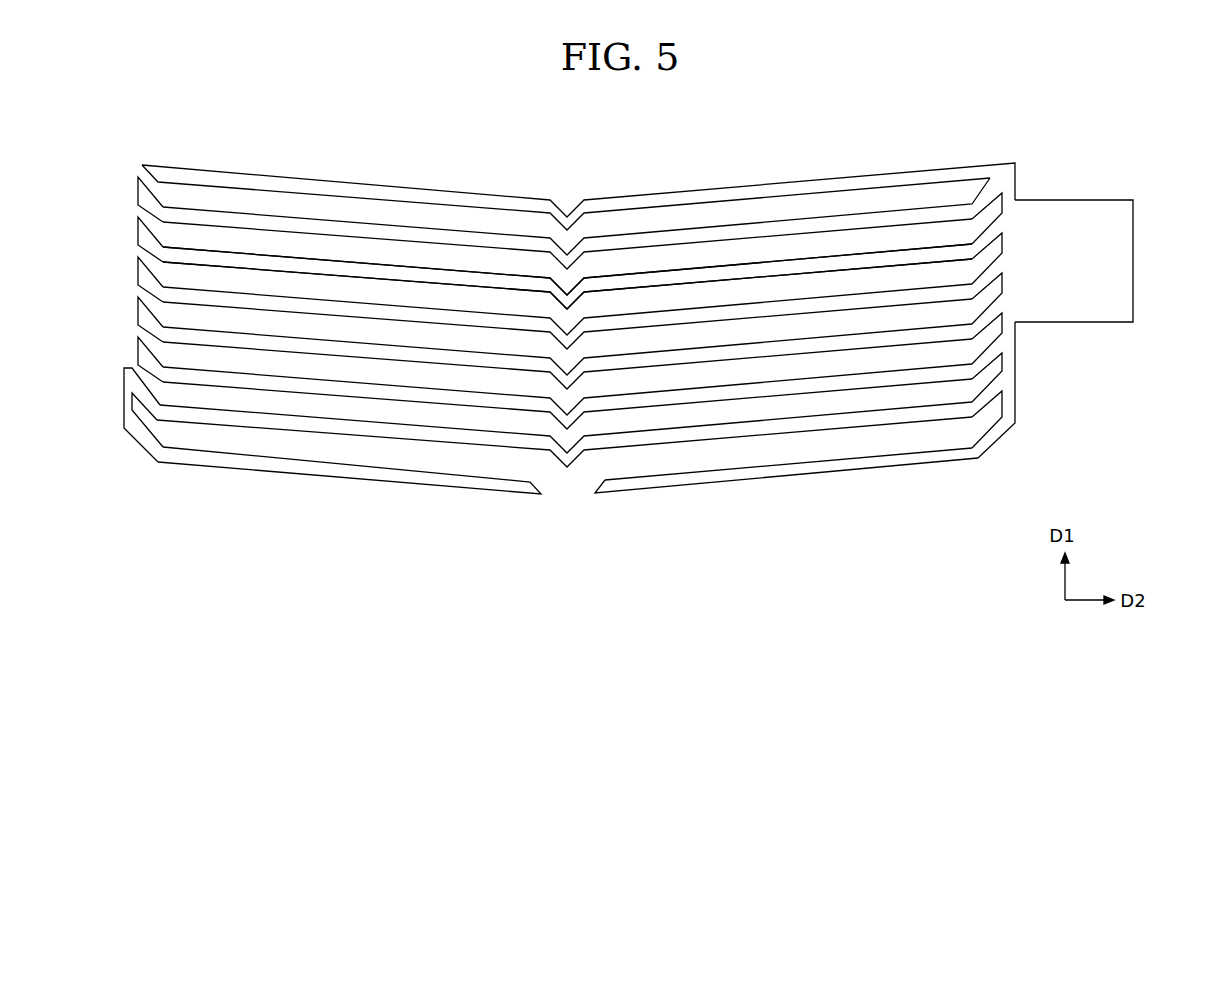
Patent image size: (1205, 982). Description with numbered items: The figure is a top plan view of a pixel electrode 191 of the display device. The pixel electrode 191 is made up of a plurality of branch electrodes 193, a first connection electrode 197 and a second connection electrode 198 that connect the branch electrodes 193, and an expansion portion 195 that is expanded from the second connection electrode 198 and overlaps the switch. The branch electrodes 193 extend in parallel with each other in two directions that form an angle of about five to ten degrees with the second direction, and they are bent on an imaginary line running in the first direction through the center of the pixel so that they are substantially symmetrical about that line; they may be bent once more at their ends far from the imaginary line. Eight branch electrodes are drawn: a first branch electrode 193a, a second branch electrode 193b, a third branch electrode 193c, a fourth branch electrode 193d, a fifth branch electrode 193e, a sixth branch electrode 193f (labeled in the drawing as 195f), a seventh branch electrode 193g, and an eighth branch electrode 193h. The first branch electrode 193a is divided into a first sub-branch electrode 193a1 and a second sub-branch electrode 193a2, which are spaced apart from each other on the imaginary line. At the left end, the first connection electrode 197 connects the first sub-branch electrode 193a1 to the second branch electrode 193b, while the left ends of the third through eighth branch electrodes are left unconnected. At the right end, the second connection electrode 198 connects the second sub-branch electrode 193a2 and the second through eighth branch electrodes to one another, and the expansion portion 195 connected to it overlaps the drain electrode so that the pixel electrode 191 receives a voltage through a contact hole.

The pixel electrode 191 is at (624, 445).
The branch electrodes 193 is at (576, 445).
The first branch electrode 193a is at (568, 523).
The first sub-branch electrode 193a1 is at (438, 478).
The second sub-branch electrode 193a2 is at (657, 483).
The second branch electrode 193b is at (725, 436).
The third branch electrode 193c is at (805, 386).
The fourth branch electrode 193d is at (878, 340).
The fifth branch electrode 193e is at (650, 322).
The sixth branch electrode 193f is at (567, 485).
The sixth line portion (as labeled) 195f is at (737, 275).
The seventh branch electrode 193g is at (810, 228).
The eighth branch electrode 193h is at (887, 180).
The expansion portion 195 is at (1133, 253).
The first connection electrode 197 is at (124, 399).
The second connection electrode 198 is at (1016, 392).